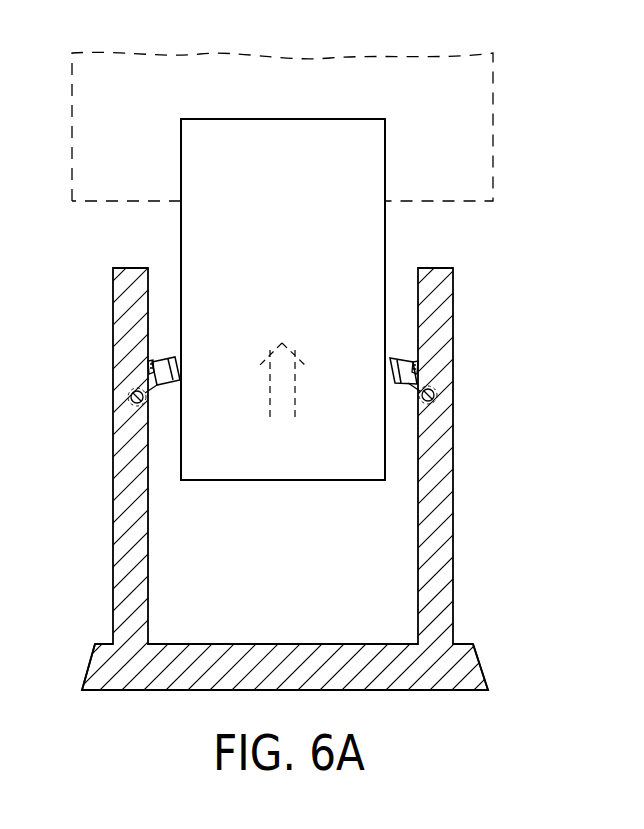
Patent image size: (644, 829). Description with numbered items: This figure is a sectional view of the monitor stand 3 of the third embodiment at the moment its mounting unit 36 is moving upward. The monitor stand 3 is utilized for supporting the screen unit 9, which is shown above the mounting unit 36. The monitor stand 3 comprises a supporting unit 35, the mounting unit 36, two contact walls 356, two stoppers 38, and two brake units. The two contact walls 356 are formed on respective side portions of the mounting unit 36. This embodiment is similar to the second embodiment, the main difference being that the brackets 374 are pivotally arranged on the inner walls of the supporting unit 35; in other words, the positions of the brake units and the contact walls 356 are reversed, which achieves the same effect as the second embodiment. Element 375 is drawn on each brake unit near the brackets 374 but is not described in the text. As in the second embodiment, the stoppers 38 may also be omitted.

The monitor stand 3 is at (498, 512).
The screen unit 9 is at (480, 125).
The supporting unit 35 is at (480, 656).
The mounting unit 36 is at (388, 461).
The contact walls 356 is at (181, 238).
The engaging block 375 is at (176, 367).
The stoppers 38 is at (150, 362).
The brackets 374 is at (158, 385).